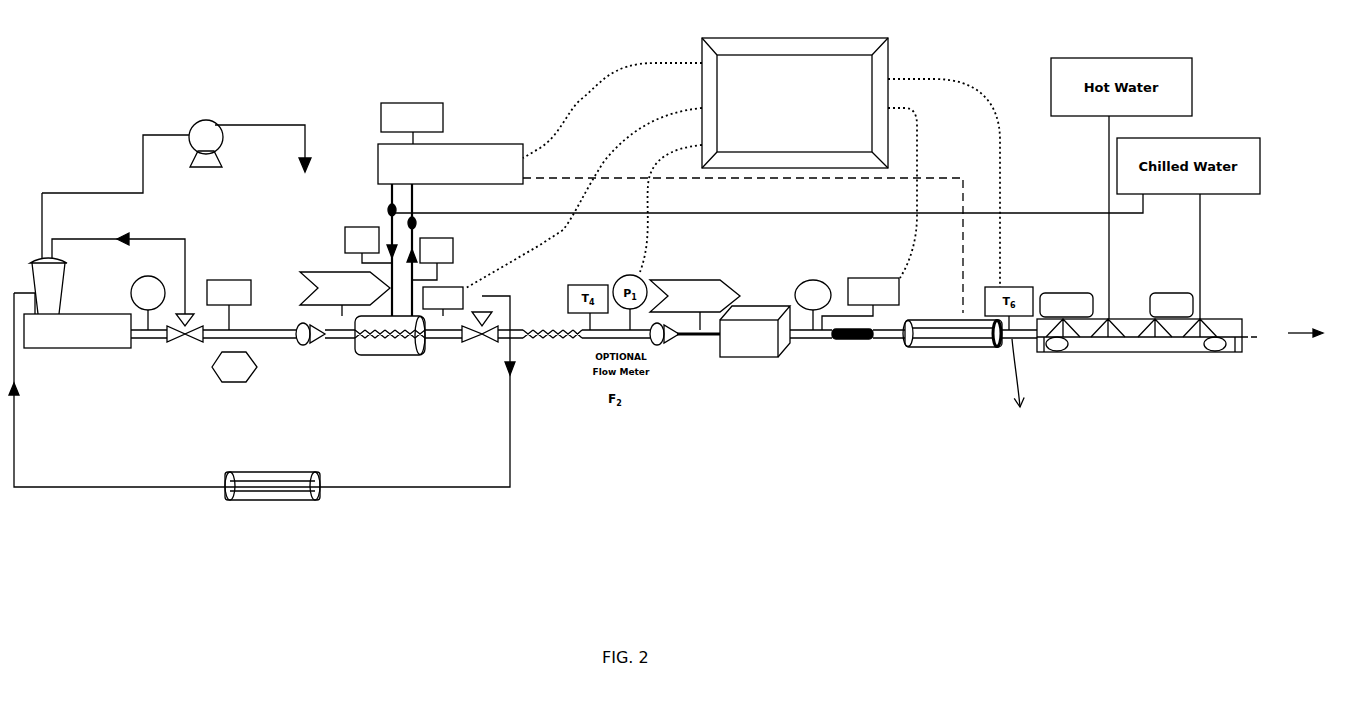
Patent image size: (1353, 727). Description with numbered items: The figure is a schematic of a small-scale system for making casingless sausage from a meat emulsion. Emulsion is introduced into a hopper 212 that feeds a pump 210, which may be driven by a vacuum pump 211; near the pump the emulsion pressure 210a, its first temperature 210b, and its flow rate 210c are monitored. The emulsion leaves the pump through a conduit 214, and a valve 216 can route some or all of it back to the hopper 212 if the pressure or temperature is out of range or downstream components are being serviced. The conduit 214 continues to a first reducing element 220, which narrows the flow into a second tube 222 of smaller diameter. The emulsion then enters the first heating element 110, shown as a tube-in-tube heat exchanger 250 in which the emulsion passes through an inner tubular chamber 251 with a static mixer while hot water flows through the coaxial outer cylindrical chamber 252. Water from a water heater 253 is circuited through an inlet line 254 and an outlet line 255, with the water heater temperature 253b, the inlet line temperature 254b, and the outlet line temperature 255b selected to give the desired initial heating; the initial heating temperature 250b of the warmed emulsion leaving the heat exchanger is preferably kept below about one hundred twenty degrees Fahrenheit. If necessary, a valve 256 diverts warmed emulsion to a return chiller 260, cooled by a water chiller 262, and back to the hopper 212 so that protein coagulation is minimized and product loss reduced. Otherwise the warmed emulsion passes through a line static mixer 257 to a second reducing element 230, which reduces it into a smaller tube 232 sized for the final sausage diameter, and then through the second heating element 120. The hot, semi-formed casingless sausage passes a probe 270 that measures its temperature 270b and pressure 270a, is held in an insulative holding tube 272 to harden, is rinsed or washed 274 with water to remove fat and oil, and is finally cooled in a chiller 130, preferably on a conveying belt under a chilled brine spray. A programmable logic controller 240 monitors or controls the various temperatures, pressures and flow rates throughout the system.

The first heating element 110 is at (390, 389).
The second heating element 120 is at (745, 357).
The chiller 130 is at (1163, 341).
The pump 210 is at (77, 331).
The pressure P0 210a is at (212, 289).
The first temperature T0 210b is at (229, 290).
The flow rate F1 210c is at (234, 381).
The vacuum pump 211 is at (176, 157).
The hopper 212 is at (107, 253).
The conduit 214 is at (153, 339).
The valve 216 is at (185, 343).
The first reducing element 220 is at (294, 326).
The second tube 222 is at (330, 338).
The second reducing element 230 is at (668, 326).
The smaller tube 232 is at (710, 338).
The controller 240 is at (733, 175).
The heat exchanger 250 is at (345, 352).
The temperature sensor T3 250b is at (451, 293).
The inner tubular chamber 251 is at (405, 355).
The outer cylindrical chamber 252 is at (355, 347).
The water heater 253 is at (450, 152).
The temperature Tw 253b is at (398, 115).
The inlet line 254 is at (373, 250).
The temperature T1 254b is at (346, 271).
The outlet line 255 is at (767, 250).
The temperature T2 255b is at (456, 251).
The valve 256 is at (483, 343).
The mixer 257 is at (551, 393).
The return chiller 260 is at (293, 499).
The water chiller 262 is at (688, 338).
The probe 270 is at (863, 339).
The pressure P2 270a is at (820, 279).
The temperature T5 270b is at (860, 293).
The holding tube 272 is at (966, 347).
The rinsing or washing 274 is at (1080, 352).